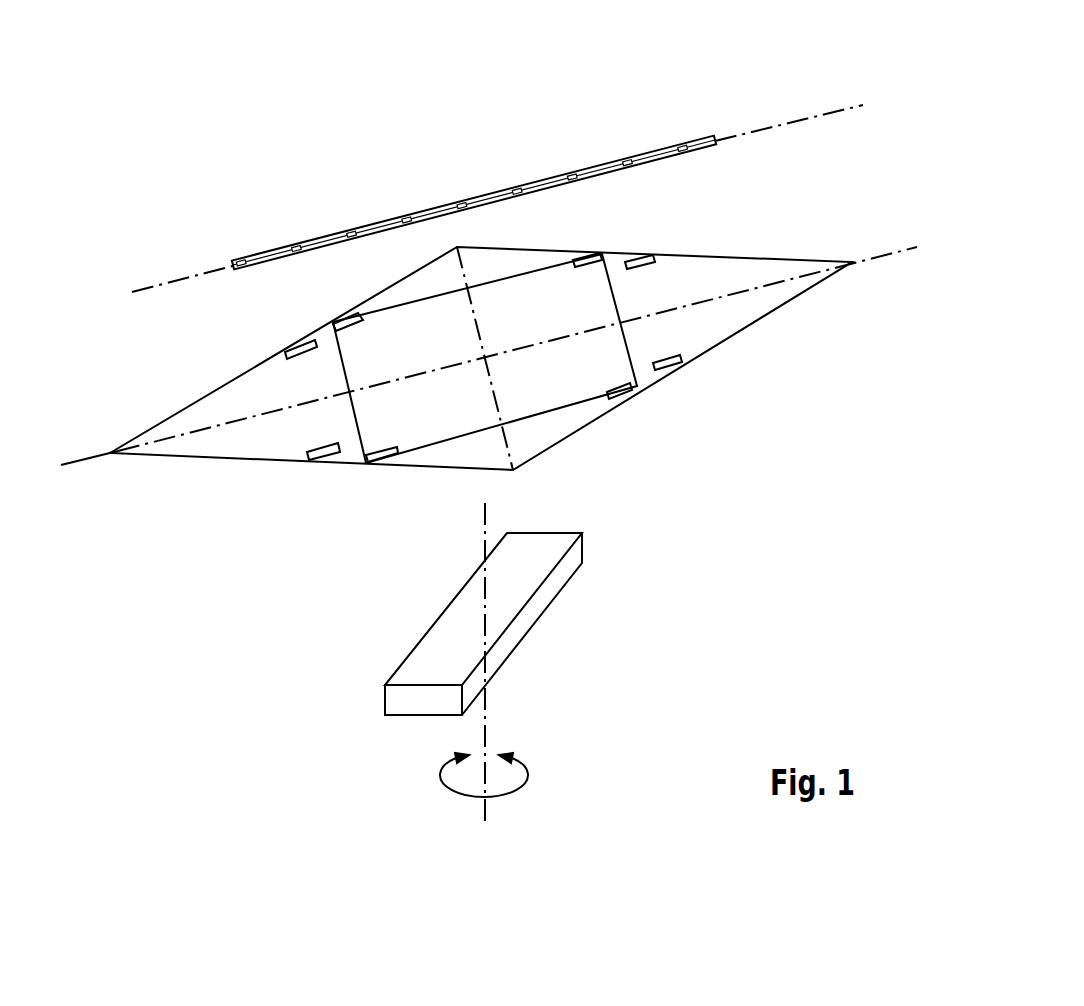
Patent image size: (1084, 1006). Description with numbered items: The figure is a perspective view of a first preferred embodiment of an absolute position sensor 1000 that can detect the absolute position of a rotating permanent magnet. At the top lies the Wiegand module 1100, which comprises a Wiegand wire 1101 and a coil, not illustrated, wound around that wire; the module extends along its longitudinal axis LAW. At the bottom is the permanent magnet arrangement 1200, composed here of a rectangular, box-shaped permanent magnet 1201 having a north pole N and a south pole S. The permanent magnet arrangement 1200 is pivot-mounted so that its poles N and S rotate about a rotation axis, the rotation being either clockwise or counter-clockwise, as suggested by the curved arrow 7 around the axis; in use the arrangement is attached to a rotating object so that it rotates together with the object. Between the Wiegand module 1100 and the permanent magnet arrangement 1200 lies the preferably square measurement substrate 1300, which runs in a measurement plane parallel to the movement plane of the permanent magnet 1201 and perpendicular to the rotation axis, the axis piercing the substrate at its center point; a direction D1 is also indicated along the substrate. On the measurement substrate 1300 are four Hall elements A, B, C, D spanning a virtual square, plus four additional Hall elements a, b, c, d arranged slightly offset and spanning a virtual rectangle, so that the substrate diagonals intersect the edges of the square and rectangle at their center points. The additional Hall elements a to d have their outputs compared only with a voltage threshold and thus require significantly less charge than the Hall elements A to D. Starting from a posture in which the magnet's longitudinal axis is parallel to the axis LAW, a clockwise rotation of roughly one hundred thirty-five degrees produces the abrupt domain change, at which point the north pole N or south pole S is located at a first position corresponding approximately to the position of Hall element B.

The position sensor 1000 is at (688, 36).
The Wiegand module 1100 is at (474, 176).
The Wiegand wire 1101 is at (570, 175).
The permanent magnet arrangement 1200 is at (550, 624).
The permanent magnet 1201 is at (582, 548).
The measurement substrate 1300 is at (489, 310).
The rotation direction of the magnet 7 is at (485, 715).
The longitudinal axis of the Wiegand module LAW is at (775, 128).
The first direction D1 is at (868, 258).
The north pole N is at (561, 509).
The south pole S is at (418, 739).
The Hall element A is at (357, 327).
The Hall element B is at (580, 273).
The Hall element C is at (609, 386).
The Hall element D is at (390, 442).
The additional Hall element a is at (295, 361).
The additional Hall element b is at (649, 271).
The additional Hall element c is at (670, 351).
The additional Hall element d is at (316, 449).